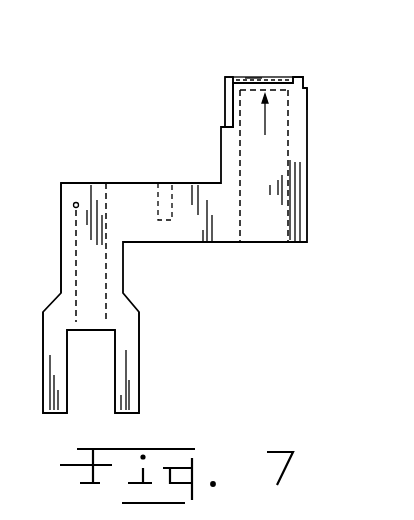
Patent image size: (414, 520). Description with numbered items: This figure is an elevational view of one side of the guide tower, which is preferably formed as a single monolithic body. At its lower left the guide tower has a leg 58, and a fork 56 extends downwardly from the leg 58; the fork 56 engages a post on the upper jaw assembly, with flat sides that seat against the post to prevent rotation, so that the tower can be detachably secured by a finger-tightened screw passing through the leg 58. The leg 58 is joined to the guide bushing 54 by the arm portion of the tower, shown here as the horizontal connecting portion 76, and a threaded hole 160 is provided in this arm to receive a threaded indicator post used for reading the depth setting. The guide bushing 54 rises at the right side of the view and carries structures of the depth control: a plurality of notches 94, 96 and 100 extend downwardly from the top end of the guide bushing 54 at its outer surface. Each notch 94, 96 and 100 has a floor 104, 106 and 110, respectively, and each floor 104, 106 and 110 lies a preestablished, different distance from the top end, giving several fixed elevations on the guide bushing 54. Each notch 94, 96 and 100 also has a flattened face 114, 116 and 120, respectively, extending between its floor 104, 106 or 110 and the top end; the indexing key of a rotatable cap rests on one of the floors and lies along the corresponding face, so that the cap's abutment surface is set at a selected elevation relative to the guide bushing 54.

The guide bushing 54 is at (308, 206).
The fork 56 is at (132, 386).
The leg 58 is at (61, 256).
The connecting portion 76 is at (185, 243).
The notch 94 is at (262, 129).
The notch 96 is at (309, 88).
The notch 100 is at (216, 92).
The floor 104 is at (268, 77).
The floor 106 is at (311, 86).
The floor 110 is at (223, 127).
The flattened face 114 is at (255, 77).
The flattened face 116 is at (305, 80).
The flattened face 120 is at (224, 81).
The threaded hole 160 is at (163, 182).